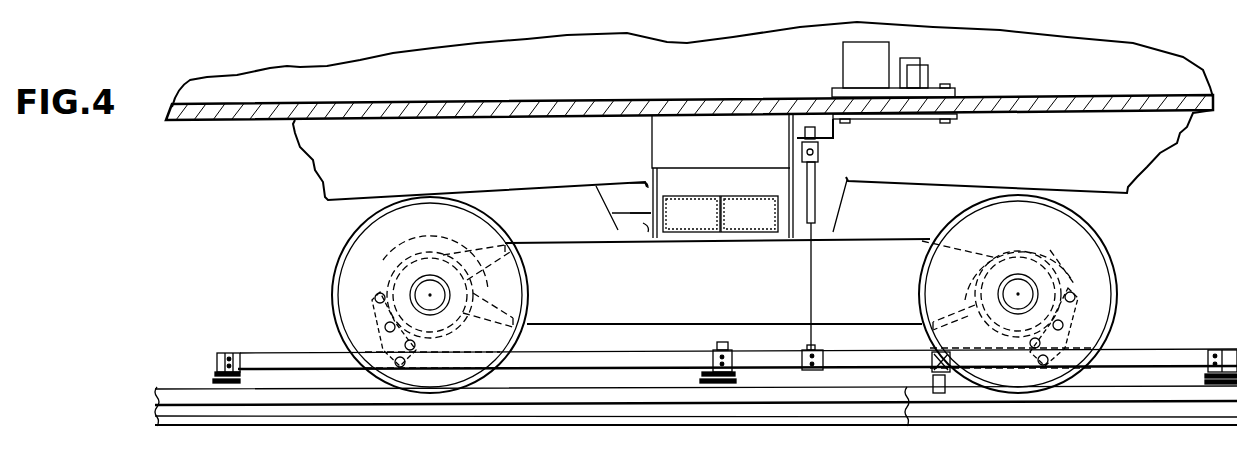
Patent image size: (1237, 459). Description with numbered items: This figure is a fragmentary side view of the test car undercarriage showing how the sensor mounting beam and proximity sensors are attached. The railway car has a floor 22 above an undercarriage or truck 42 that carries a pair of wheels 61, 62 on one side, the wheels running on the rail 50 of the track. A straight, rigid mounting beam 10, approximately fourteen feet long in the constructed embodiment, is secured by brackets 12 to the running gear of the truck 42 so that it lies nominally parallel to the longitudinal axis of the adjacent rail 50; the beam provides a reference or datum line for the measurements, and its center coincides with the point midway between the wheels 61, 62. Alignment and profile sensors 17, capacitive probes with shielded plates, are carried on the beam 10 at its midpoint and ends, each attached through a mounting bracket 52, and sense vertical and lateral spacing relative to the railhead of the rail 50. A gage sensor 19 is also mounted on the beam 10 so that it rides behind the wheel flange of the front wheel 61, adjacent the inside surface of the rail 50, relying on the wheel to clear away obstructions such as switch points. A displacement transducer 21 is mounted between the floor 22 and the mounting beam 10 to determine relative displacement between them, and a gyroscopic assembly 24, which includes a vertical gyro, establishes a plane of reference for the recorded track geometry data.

The mounting beam 10 is at (216, 360).
The brackets 12 is at (377, 328).
The alignment and profile sensor 17 is at (246, 392).
The gage sensor 19 is at (938, 394).
The displacement transducer 21 is at (813, 196).
The floor 22 is at (471, 106).
The gyroscopic assembly 24 is at (862, 62).
The truck 42 is at (724, 298).
The rail 50 is at (875, 396).
The mounting bracket 52 is at (240, 355).
The wheel 61 is at (1080, 250).
The wheel 62 is at (512, 290).